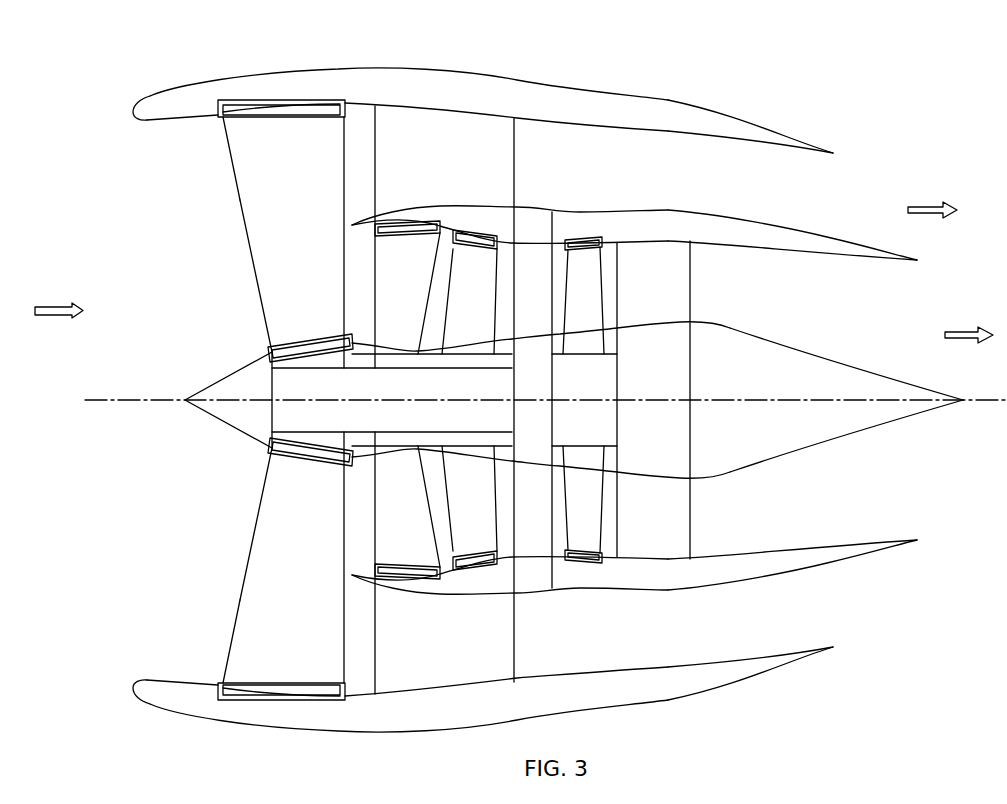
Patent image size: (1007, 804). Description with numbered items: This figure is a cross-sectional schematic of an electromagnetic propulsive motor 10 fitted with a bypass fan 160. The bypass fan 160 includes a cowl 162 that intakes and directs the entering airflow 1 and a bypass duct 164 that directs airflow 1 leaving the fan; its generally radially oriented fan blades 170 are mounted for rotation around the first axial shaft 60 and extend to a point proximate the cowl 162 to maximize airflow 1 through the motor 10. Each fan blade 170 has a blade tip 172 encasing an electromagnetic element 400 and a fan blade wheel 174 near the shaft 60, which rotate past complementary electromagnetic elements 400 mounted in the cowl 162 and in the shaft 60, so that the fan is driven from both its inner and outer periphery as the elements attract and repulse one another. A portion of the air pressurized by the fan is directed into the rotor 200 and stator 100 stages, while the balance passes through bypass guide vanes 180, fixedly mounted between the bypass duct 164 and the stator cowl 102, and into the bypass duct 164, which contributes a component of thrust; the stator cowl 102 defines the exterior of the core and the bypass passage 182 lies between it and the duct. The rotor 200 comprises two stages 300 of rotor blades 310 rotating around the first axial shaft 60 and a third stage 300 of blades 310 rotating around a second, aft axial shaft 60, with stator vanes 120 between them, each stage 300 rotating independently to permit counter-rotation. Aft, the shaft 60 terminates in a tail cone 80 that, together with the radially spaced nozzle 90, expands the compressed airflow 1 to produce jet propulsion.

The airflow 1 is at (53, 305).
The electromagnetic propulsive motor 10 is at (883, 97).
The central axial shaft 60 is at (287, 422).
The tail cone 80 is at (890, 388).
The nozzle 90 is at (843, 243).
The stator 100 is at (520, 257).
The stator cowl 102 is at (540, 228).
The stator vanes 120 is at (682, 277).
The bypass fan 160 is at (833, 70).
The cowl 162 is at (147, 108).
The bypass duct 164 is at (695, 137).
The fan blades 170 is at (267, 207).
The blade tip 172 is at (237, 123).
The fan blade wheel 174 is at (298, 366).
The bypass guide vanes 180 is at (408, 667).
The bypass passage inner surface 182 is at (490, 131).
The rotor 200 is at (397, 299).
The rotor stages 300 is at (397, 247).
The rotor blades 310 is at (469, 400).
The electromagnetic elements 400 is at (218, 112).